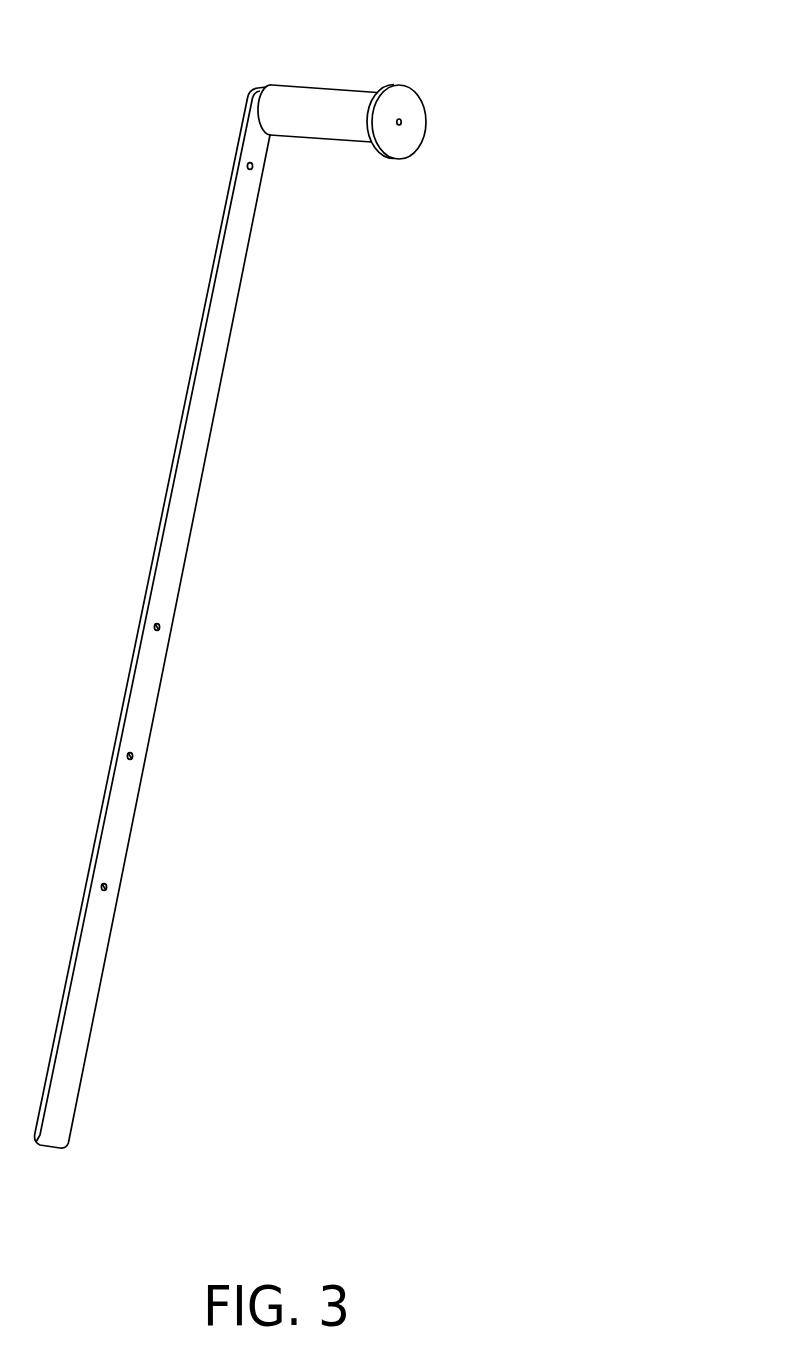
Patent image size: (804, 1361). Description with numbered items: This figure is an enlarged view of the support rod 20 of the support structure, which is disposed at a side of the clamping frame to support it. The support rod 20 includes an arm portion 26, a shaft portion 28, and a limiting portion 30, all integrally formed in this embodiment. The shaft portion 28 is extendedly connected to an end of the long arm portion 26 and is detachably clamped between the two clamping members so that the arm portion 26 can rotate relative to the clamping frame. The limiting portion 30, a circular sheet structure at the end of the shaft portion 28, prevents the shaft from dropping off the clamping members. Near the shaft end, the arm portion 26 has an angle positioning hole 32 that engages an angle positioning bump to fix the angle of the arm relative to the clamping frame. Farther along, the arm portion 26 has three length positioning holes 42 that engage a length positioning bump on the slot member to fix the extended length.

The support rod 20 is at (500, 68).
The arm portion 26 is at (185, 617).
The shaft portion 28 is at (328, 122).
The limiting portion 30 is at (408, 133).
The angle positioning hole 32 is at (247, 165).
The length positioning hole 42 is at (160, 626).